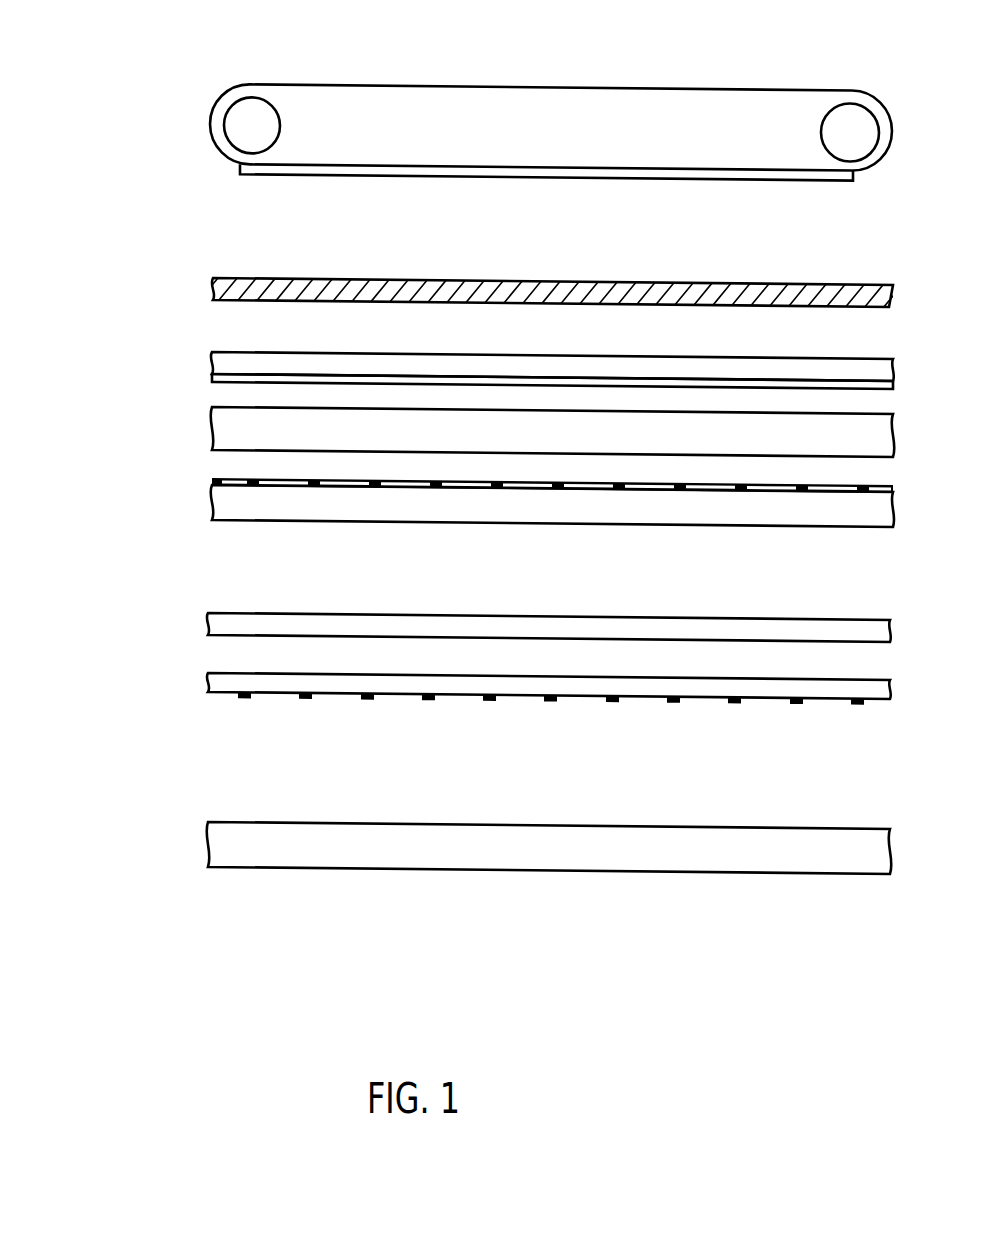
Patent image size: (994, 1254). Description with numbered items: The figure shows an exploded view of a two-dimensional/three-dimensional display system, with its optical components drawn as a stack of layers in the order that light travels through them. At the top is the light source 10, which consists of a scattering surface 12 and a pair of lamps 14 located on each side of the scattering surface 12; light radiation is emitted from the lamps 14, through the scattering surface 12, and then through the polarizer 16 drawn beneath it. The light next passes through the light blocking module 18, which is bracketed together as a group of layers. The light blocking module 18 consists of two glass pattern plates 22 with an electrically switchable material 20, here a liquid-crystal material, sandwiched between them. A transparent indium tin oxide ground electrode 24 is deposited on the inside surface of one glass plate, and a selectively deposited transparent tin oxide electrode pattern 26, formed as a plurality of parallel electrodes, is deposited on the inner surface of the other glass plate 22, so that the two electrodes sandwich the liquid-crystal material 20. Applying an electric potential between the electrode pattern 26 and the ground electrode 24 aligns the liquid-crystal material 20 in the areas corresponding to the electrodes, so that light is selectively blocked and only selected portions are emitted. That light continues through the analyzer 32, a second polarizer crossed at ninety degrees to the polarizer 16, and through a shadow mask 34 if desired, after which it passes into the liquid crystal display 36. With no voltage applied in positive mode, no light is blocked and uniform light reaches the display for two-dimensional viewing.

The light source 10 is at (203, 93).
The scattering surface 12 is at (683, 173).
The lamps 14 is at (255, 120).
The polarizer 16 is at (218, 283).
The light blocking module 18 is at (448, 424).
The electrically switchable material 20 is at (230, 423).
The glass pattern plates 22 is at (220, 367).
The ITO ground electrode 24 is at (217, 377).
The tin oxide electrode pattern 26 is at (505, 472).
The analyzer 32 is at (217, 622).
The shadow mask 34 is at (218, 685).
The liquid crystal display 36 is at (218, 828).